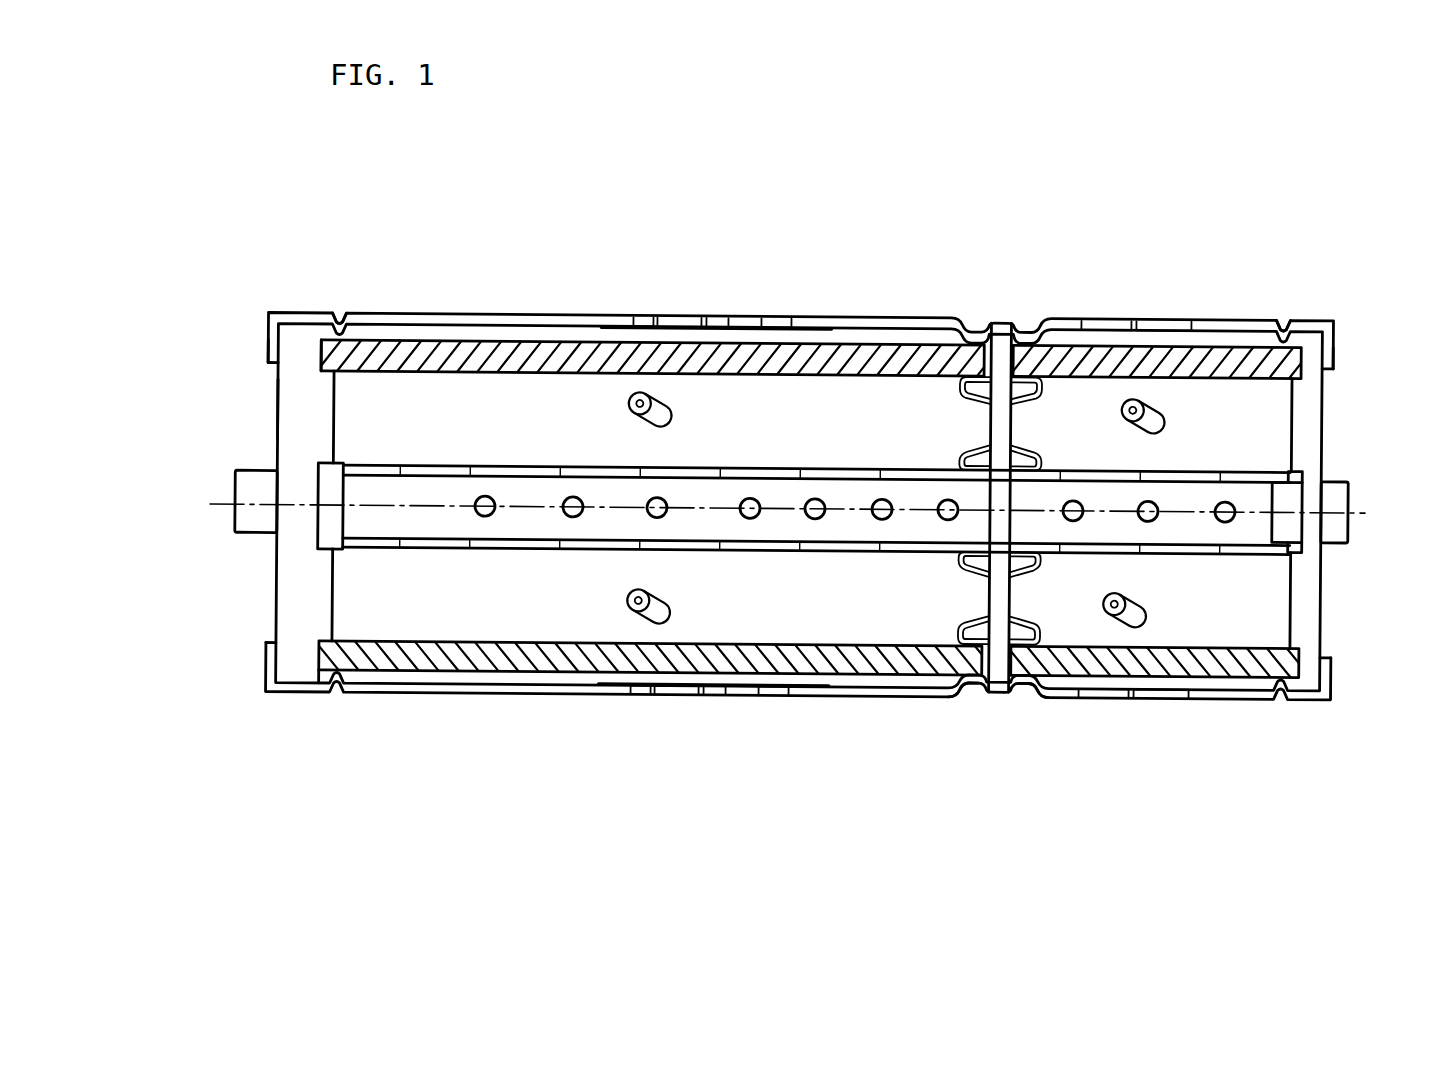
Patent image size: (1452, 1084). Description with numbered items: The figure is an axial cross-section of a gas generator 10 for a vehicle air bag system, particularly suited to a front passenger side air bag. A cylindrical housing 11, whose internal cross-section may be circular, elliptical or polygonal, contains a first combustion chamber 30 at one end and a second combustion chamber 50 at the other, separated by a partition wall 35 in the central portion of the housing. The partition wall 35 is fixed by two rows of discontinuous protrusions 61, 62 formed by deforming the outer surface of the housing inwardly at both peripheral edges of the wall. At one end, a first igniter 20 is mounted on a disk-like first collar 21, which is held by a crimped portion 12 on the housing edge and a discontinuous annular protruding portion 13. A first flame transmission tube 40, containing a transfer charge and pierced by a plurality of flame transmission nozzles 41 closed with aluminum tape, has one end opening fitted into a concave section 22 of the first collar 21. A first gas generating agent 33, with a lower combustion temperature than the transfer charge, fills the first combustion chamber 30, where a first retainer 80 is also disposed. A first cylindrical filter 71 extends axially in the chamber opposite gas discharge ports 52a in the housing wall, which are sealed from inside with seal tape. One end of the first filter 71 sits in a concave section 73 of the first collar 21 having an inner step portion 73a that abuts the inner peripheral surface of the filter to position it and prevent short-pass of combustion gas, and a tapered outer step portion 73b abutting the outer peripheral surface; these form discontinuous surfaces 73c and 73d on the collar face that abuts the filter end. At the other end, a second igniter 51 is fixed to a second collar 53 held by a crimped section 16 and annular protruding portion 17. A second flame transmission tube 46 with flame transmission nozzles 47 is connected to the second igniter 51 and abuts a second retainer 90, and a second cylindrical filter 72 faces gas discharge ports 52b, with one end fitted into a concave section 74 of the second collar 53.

The gas generator 10 is at (867, 185).
The cylindrical housing 11 is at (1250, 322).
The crimped portion 12 is at (268, 348).
The annular protruding portion 13 is at (340, 322).
The crimped section 16 is at (1335, 356).
The annular protruding portion 17 is at (1283, 318).
The first igniter 20 is at (248, 518).
The first collar 21 is at (293, 410).
The concave section 22 is at (322, 548).
The first combustion chamber 30 is at (522, 428).
The first gas generating agent 33 is at (662, 418).
The partition wall 35 is at (1000, 333).
The first flame transmission tube 40 is at (398, 548).
The flame transmission nozzles 41 is at (478, 507).
The second flame transmission tube 46 is at (1190, 552).
The flame transmission nozzles 47 is at (1222, 510).
The second combustion chamber 50 is at (1095, 446).
The second igniter 51 is at (1352, 508).
The gas discharge ports 52a is at (716, 322).
The gas discharge ports 52b is at (1186, 322).
The second collar 53 is at (1315, 420).
The discontinuous protrusions 61 is at (963, 700).
The discontinuous protrusions 62 is at (1028, 700).
The first cylindrical filter 71 is at (845, 368).
The second cylindrical filter 72 is at (1226, 368).
The concave section 73 is at (312, 772).
The inner step portion 73a is at (322, 648).
The outer step portion 73b is at (324, 672).
The discontinuous surface 73c is at (337, 397).
The discontinuous surface 73d is at (317, 355).
The concave section 74 is at (1275, 700).
The first retainer 80 is at (973, 613).
The second retainer 90 is at (1027, 604).